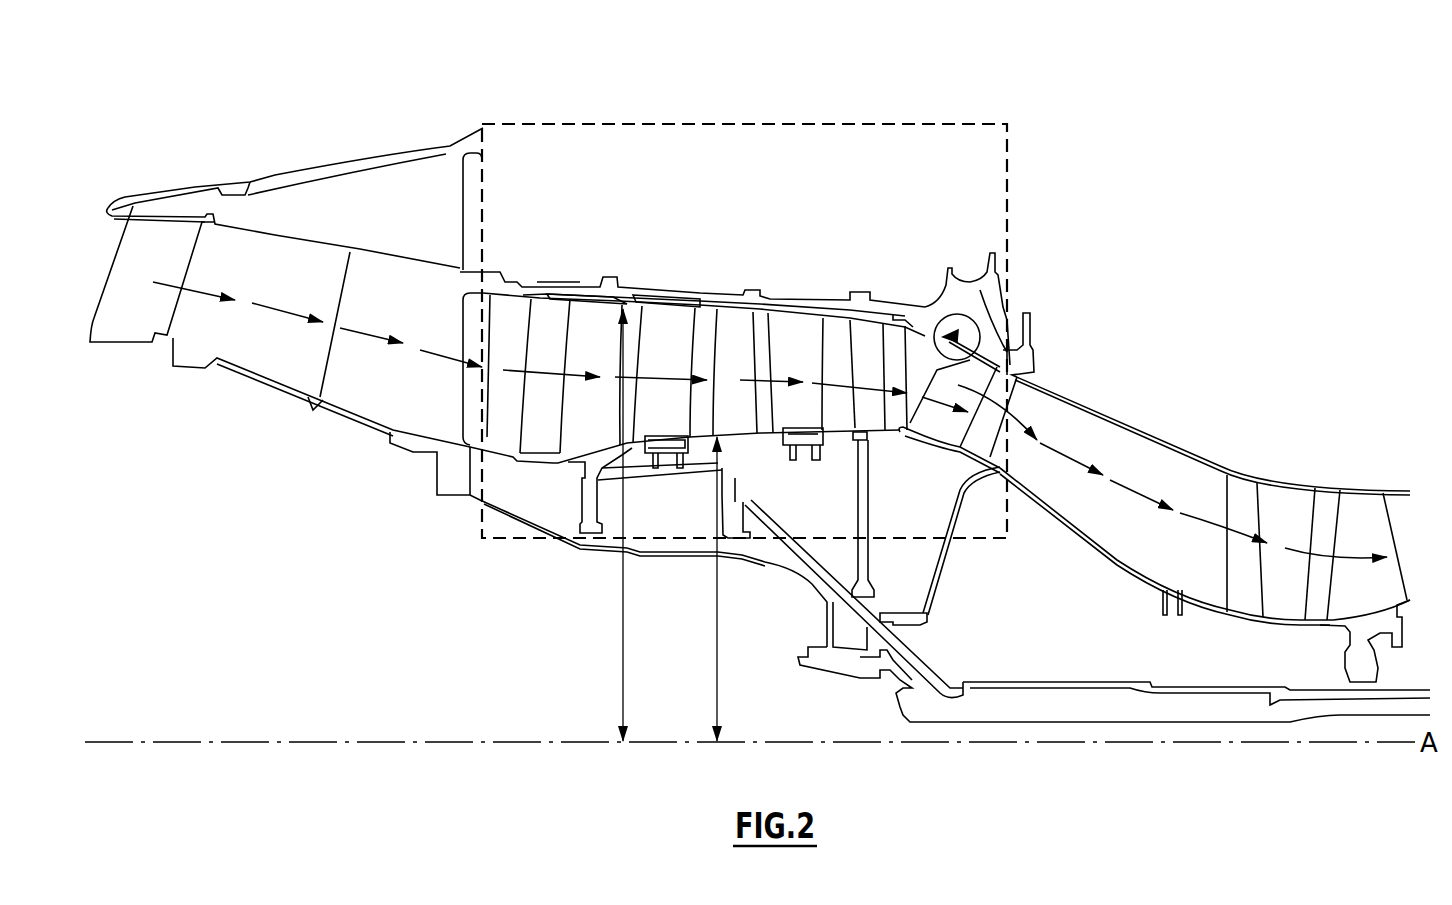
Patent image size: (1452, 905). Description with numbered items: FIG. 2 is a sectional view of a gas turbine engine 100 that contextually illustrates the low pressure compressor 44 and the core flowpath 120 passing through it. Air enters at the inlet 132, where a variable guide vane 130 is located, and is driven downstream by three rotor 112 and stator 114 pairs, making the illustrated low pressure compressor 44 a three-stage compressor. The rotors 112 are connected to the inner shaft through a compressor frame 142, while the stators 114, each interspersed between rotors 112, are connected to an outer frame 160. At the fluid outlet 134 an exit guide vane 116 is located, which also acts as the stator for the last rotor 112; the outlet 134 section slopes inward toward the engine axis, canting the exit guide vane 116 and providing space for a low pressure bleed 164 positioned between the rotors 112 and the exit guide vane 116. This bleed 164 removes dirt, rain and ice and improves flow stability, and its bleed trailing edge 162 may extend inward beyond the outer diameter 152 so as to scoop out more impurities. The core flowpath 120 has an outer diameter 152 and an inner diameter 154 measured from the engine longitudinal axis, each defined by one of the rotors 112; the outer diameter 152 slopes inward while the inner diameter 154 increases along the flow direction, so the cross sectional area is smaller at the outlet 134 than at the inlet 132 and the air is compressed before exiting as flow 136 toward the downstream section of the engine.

The gas turbine engine 100 is at (883, 100).
The low pressure compressor 44 is at (753, 124).
The core flowpath 120 is at (137, 278).
The inlet 132 is at (461, 333).
The variable guide vane 130 is at (525, 352).
The rotor 112 is at (617, 419).
The stator 114 is at (690, 419).
The outer frame 160 is at (710, 293).
The bleed trailing edge 162 is at (953, 315).
The low pressure bleed 164 is at (966, 290).
The fluid outlet 134 is at (937, 373).
The exit guide vane 116 is at (1010, 374).
The exhaust flow 136 is at (1297, 548).
The compressor frame 142 is at (748, 520).
The outer diameter 152 is at (621, 672).
The inner diameter 154 is at (716, 610).